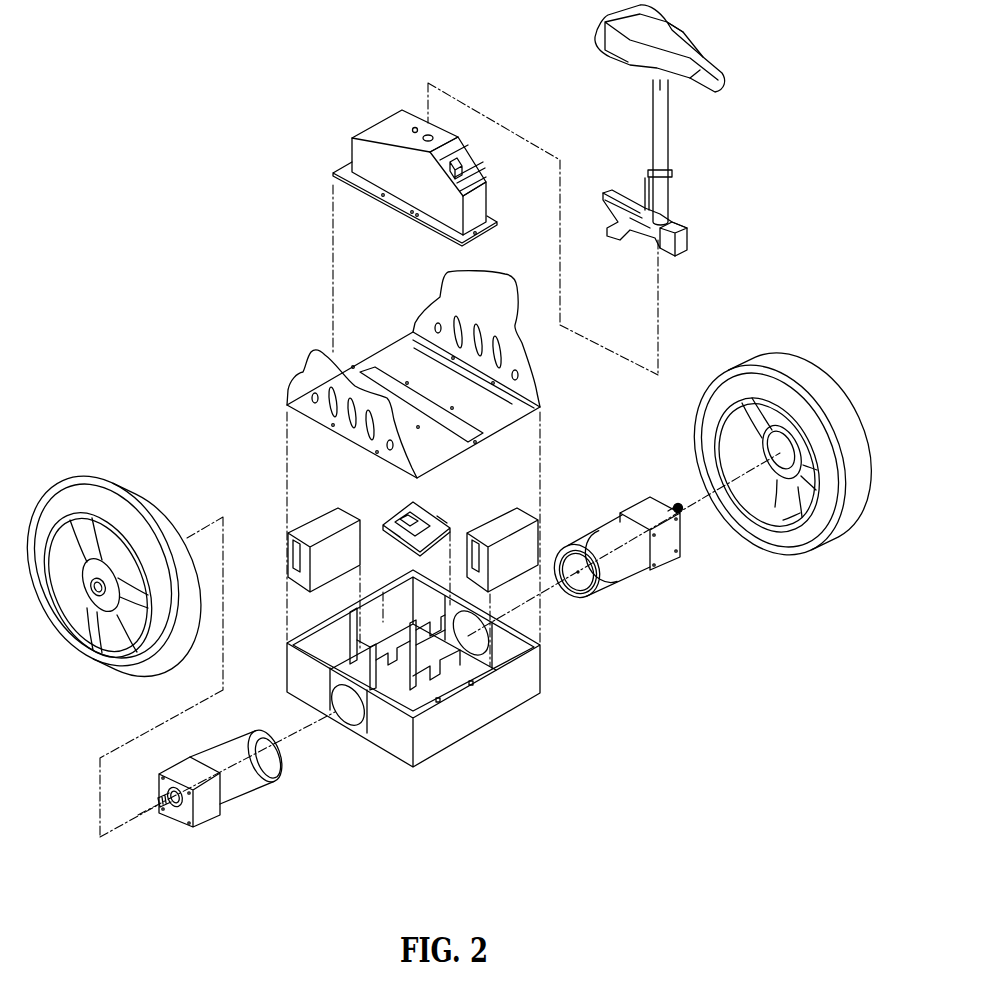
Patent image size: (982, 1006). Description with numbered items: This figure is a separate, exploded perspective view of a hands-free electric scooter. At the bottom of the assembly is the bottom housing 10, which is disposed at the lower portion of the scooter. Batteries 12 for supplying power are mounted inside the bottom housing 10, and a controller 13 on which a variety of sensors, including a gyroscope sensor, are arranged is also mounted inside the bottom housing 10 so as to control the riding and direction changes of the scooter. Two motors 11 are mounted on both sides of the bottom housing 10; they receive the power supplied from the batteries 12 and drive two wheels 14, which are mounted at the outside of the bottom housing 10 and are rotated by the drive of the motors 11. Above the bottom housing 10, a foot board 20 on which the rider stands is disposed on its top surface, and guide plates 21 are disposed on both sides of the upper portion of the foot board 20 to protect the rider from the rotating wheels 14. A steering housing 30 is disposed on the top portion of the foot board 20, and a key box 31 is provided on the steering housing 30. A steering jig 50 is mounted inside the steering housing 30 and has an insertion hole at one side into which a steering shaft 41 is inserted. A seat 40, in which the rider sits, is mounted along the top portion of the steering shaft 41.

The bottom housing 10 is at (483, 720).
The motors 11 is at (245, 782).
The batteries 12 is at (314, 525).
The controller 13 is at (402, 507).
The wheels 14 is at (100, 473).
The foot board 20 is at (388, 348).
The guide plates 21 is at (445, 283).
The steering housing 30 is at (375, 136).
The key box 31 is at (468, 160).
The seat 40 is at (688, 43).
The steering shaft 41 is at (668, 129).
The steering jig 50 is at (633, 242).